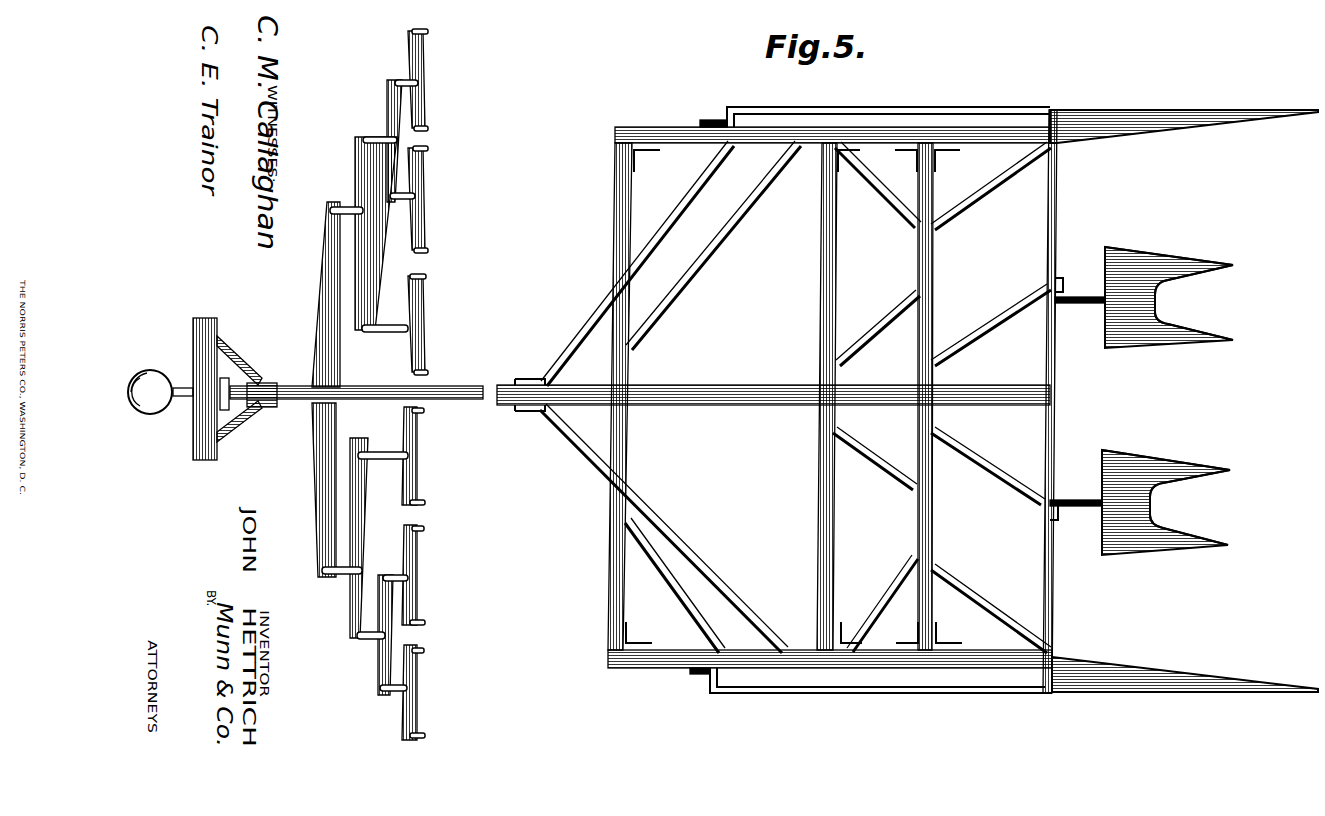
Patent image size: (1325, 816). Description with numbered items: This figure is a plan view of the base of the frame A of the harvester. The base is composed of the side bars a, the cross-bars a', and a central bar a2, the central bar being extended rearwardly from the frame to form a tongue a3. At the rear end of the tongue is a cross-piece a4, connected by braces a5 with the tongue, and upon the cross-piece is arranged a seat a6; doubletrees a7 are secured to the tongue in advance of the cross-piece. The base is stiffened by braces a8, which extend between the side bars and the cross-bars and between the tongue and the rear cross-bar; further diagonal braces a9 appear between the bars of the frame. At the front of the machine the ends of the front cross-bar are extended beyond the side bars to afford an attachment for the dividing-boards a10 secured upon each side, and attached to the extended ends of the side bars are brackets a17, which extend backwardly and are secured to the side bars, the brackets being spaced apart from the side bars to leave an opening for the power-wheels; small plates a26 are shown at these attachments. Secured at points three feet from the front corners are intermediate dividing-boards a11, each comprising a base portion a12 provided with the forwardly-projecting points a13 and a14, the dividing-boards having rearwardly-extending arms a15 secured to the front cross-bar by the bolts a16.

The frame A is at (794, 396).
The side bars a is at (830, 404).
The cross-bars a' is at (815, 401).
The central bar a2 is at (738, 372).
The tongue a3 is at (463, 400).
The cross-piece a4 is at (202, 348).
The braces a5 is at (243, 363).
The seat a6 is at (152, 410).
The doubletrees a7 is at (317, 283).
The braces a8 is at (892, 597).
The right diagonal braces a9 is at (998, 463).
The dividing-boards a10 is at (1142, 668).
The intermediate dividing-boards a11 is at (1145, 563).
The base portion a12 is at (1143, 463).
The forwardly-projecting point a13 is at (1197, 267).
The forwardly-projecting point a14 is at (1213, 318).
The rearwardly-extending arms a15 is at (1072, 502).
The bolts a16 is at (1067, 532).
The brackets a17 is at (853, 707).
The spacer plates a26 is at (687, 710).